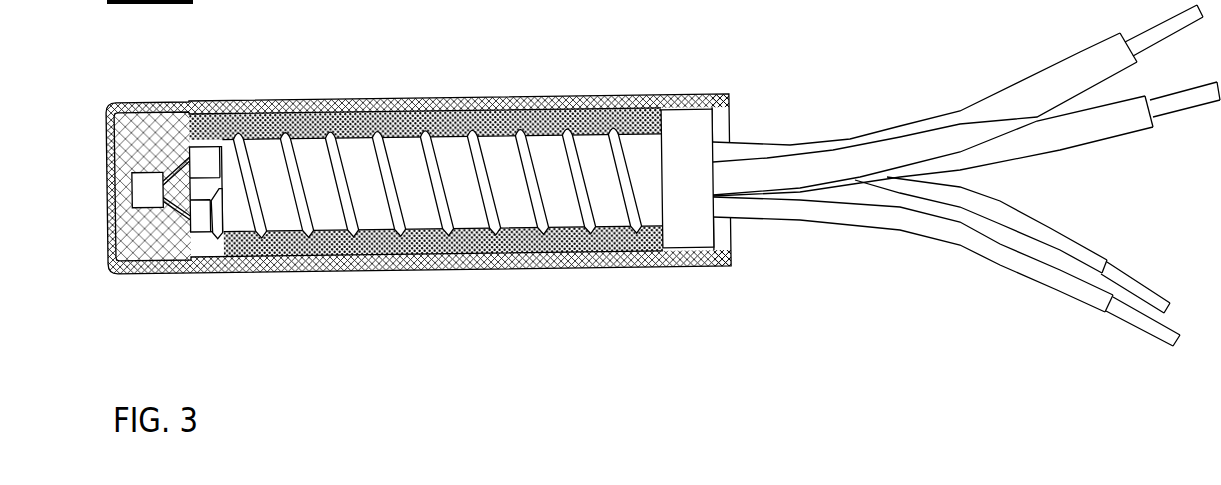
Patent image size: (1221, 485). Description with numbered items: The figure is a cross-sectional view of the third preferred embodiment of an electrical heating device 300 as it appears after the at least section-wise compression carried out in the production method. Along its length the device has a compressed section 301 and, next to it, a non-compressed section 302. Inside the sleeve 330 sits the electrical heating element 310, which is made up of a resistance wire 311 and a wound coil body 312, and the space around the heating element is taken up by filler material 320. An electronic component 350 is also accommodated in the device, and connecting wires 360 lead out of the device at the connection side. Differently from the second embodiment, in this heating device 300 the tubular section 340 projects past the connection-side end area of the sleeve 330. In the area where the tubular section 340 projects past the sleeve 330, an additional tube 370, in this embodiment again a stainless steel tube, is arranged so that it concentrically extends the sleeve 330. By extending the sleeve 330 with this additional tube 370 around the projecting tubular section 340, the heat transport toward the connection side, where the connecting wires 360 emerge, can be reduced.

The electrical heating device 300 is at (622, 276).
The compressed section 301 is at (729, 93).
The non-compressed section 302 is at (189, 101).
The electrical heating element 310 is at (302, 275).
The resistance wire 311 is at (462, 272).
The wound coil body 312 is at (387, 275).
The filler material 320 is at (217, 275).
The sleeve 330 is at (533, 268).
The tubular section 340 is at (625, 265).
The electronic component 350 is at (162, 275).
The connecting wires 360 is at (773, 168).
The additional tube 370 is at (710, 265).